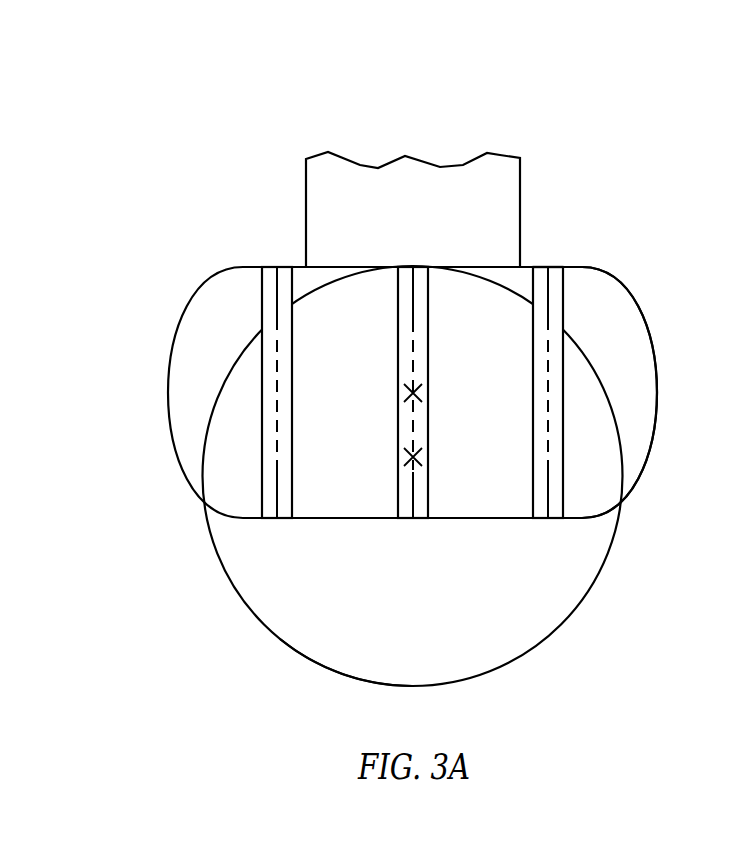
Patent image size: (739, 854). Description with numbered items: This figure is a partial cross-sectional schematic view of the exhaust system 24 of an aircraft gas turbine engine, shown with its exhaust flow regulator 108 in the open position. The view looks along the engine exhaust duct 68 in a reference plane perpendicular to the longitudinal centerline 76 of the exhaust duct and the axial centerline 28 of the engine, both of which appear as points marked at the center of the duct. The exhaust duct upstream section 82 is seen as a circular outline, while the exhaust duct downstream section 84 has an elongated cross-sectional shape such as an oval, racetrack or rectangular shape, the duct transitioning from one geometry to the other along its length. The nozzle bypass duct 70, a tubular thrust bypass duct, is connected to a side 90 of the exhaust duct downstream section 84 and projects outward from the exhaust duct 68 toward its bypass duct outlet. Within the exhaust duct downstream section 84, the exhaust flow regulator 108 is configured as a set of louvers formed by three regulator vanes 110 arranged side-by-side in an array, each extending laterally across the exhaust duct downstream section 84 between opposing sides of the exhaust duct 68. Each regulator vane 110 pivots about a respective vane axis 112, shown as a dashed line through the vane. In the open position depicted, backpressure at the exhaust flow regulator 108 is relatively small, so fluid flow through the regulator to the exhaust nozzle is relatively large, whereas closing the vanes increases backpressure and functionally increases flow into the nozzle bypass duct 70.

The exhaust system 24 is at (412, 394).
The nozzle bypass duct 70 is at (298, 191).
The side of the exhaust duct downstream section 90 is at (542, 267).
The exhaust flow regulator 108 is at (582, 317).
The exhaust duct downstream section 84 is at (168, 387).
The vane axis 112 is at (548, 345).
The longitudinal centerline 76 is at (422, 393).
The axial centerline 28 is at (422, 457).
The regulator vanes 110 is at (292, 497).
The engine exhaust duct 68 is at (230, 572).
The exhaust duct upstream section 82 is at (280, 640).